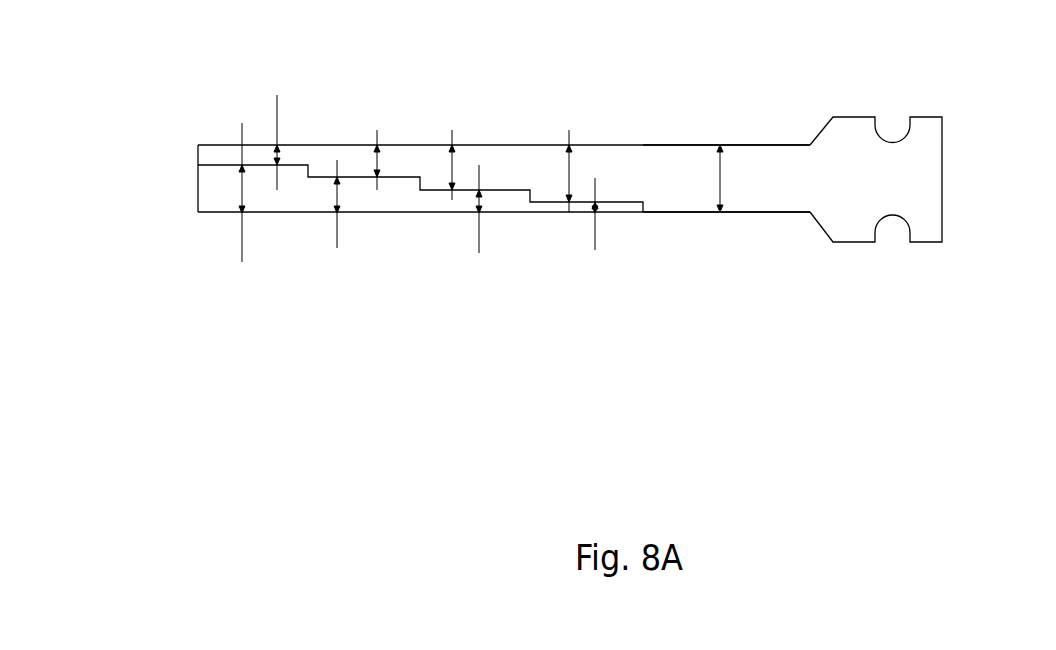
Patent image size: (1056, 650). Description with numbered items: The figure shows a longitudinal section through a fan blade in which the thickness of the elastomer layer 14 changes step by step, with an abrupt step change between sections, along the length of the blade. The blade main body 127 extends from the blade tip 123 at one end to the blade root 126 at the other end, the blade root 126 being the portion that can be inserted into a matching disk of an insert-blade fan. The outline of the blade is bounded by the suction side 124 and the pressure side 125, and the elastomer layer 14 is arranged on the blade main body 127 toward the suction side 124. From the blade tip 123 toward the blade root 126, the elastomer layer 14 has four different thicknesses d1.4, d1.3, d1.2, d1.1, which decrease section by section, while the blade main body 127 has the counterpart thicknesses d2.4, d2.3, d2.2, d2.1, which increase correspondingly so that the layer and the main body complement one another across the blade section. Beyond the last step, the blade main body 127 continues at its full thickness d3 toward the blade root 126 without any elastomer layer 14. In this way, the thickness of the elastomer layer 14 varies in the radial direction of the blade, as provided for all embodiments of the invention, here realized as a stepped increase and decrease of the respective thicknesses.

The elastomer layer 14 is at (386, 198).
The blade tip 123 is at (197, 155).
The suction side 124 is at (437, 213).
The pressure side 125 is at (533, 147).
The blade root 126 is at (915, 205).
The blade main body 127 is at (665, 163).
The thickness of the elastomer layer d1.4 is at (243, 208).
The thickness of the main body d2.4 is at (278, 108).
The thickness of the elastomer layer d1.3 is at (327, 218).
The thickness of the main body d2.3 is at (380, 160).
The thickness of the main body d2.2 is at (455, 160).
The thickness of the elastomer layer d1.2 is at (490, 223).
The thickness of the main body d2.1 is at (572, 165).
The thickness of the elastomer layer d1.1 is at (603, 230).
The dimension d3 is at (721, 168).